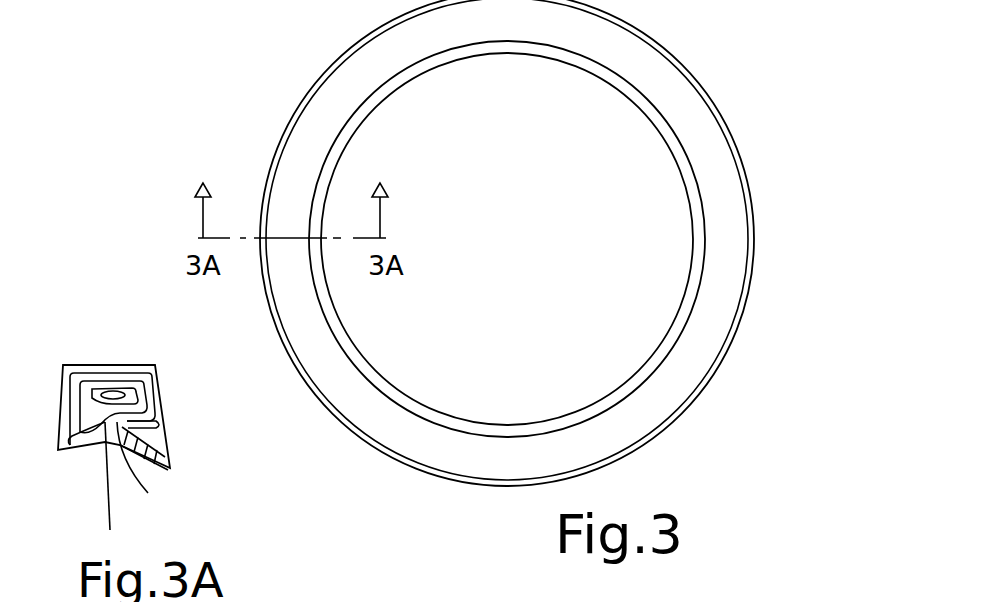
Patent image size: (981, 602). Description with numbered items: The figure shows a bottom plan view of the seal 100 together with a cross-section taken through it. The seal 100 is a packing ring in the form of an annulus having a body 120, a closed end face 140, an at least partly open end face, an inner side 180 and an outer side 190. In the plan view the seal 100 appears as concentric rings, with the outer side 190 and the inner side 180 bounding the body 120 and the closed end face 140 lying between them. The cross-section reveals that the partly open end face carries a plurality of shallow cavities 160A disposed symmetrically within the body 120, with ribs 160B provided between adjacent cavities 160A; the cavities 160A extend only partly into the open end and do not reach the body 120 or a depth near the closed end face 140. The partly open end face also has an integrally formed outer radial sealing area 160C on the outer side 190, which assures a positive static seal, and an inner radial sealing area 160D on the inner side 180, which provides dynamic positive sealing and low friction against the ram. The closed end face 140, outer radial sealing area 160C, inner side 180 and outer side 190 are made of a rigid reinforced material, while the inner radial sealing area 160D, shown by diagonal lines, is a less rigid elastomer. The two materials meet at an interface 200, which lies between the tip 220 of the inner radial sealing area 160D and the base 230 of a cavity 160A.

In FIG. 3, the seal 100 is at (267, 52).
In FIG. 3A, the seal 100 is at (106, 327).
In FIG. 3, the body 120 is at (777, 284).
In FIG. 3, the closed end face 140 is at (703, 148).
In FIG. 3A, the closed end face 140 is at (128, 368).
In FIG. 3A, the shallow cavities 160A is at (170, 467).
In FIG. 3A, the ribs 160B is at (122, 489).
In FIG. 3A, the outer radial sealing area 160C is at (55, 450).
In FIG. 3A, the inner radial sealing area 160D is at (168, 458).
In FIG. 3, the inner side 180 is at (643, 113).
In FIG. 3A, the inner side 180 is at (157, 382).
In FIG. 3, the outer side 190 is at (698, 85).
In FIG. 3A, the outer side 190 is at (58, 398).
In FIG. 3A, the interface 200 is at (163, 435).
In FIG. 3A, the tip 220 is at (157, 471).
In FIG. 3A, the base 230 is at (127, 430).